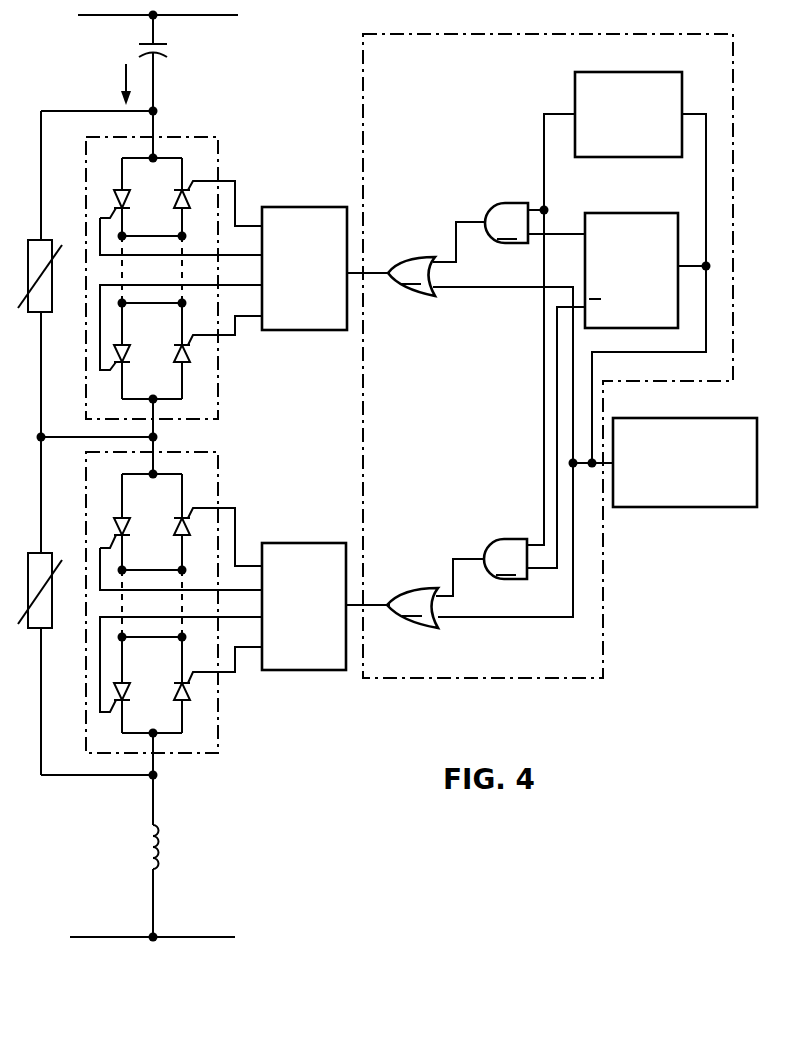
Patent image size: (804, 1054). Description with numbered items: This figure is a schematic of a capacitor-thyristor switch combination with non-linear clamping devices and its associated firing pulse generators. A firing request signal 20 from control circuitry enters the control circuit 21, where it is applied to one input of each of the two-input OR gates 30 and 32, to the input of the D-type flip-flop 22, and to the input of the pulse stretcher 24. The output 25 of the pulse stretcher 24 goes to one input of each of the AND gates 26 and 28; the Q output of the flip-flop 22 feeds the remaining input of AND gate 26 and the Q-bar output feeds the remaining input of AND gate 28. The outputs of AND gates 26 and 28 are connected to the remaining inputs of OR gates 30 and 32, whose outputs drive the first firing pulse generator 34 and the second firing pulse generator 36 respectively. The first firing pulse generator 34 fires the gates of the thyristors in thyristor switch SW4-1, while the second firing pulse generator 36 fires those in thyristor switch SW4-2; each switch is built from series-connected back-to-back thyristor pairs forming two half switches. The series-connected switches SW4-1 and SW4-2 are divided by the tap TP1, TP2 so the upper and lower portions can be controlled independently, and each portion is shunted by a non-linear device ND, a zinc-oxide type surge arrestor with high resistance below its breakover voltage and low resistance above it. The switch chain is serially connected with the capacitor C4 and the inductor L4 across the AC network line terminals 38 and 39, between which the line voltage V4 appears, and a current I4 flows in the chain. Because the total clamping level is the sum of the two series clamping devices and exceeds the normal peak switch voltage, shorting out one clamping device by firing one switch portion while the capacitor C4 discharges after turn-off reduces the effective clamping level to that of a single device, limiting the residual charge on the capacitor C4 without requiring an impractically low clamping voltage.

The voltage source line V4 is at (144, 16).
The AC network line terminal 38 is at (150, 18).
The capacitor C4 is at (168, 52).
The current I4 is at (122, 83).
The non-linear device ND is at (45, 240).
The thyristor switch SW4-1 is at (218, 141).
The thyristor switch SW4-2 is at (218, 469).
The tap TP1 is at (160, 437).
The tap TP2 is at (41, 434).
The inductor L4 is at (158, 842).
The AC network line terminal 39 is at (153, 934).
The first firing pulse generator 34 is at (300, 330).
The second firing pulse generator 36 is at (290, 670).
The control circuit 21 is at (468, 34).
The OR gate 30 is at (480, 419).
The OR gate 32 is at (412, 608).
The AND gate 26 is at (535, 223).
The AND gate 28 is at (481, 567).
The pulse stretcher 24 is at (628, 72).
The output of pulse stretcher 25 is at (544, 126).
The flip-flop 22 is at (648, 213).
The signal from firing request control circuit 20 is at (680, 508).